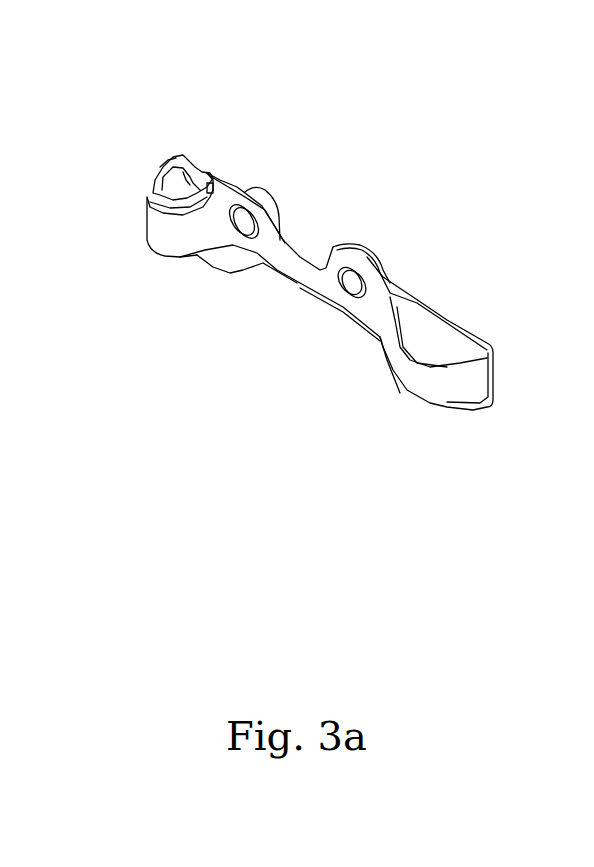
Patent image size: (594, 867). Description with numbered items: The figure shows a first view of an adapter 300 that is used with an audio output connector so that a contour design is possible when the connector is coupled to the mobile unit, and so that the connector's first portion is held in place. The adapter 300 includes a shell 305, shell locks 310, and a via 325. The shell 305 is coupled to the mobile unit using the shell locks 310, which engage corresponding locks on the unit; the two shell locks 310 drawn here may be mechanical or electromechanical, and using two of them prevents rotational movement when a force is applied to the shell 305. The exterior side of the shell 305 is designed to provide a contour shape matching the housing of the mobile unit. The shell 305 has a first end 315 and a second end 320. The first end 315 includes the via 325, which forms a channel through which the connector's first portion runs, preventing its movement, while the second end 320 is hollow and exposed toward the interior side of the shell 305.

The adapter 300 is at (495, 104).
The shell 305 is at (288, 280).
The shell locks 310 is at (246, 208).
The first end 315 is at (170, 227).
The second end 320 is at (434, 385).
The via 325 is at (183, 160).